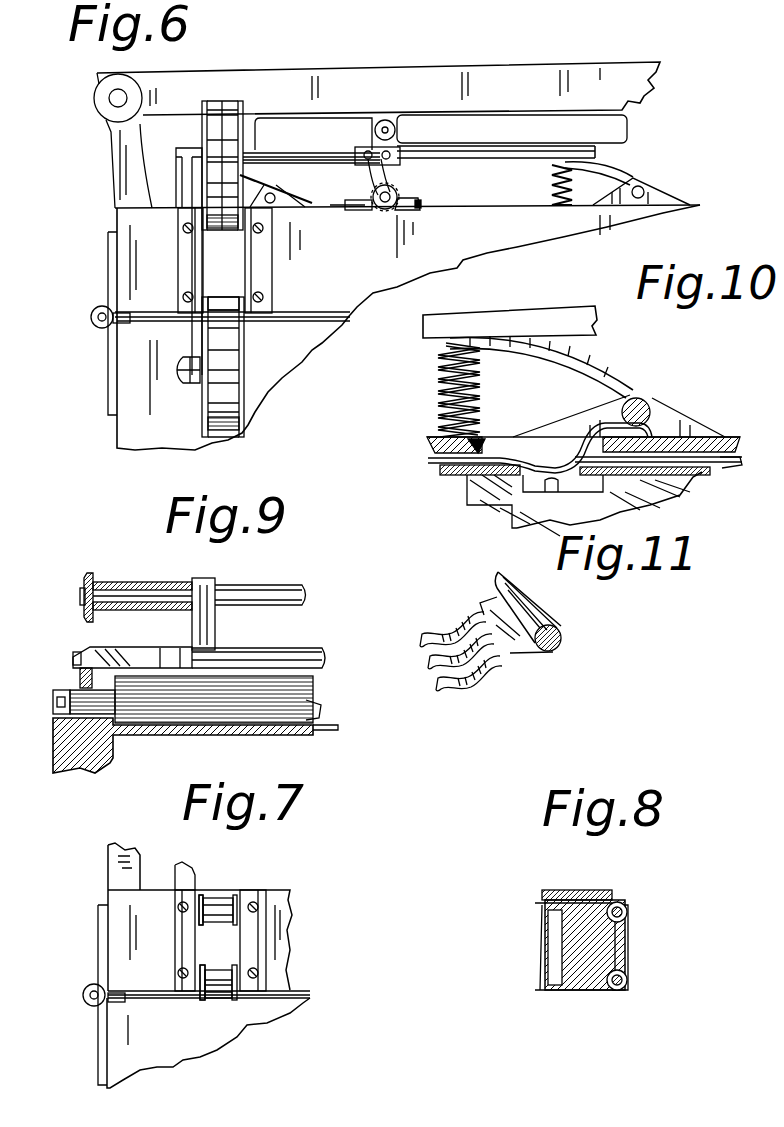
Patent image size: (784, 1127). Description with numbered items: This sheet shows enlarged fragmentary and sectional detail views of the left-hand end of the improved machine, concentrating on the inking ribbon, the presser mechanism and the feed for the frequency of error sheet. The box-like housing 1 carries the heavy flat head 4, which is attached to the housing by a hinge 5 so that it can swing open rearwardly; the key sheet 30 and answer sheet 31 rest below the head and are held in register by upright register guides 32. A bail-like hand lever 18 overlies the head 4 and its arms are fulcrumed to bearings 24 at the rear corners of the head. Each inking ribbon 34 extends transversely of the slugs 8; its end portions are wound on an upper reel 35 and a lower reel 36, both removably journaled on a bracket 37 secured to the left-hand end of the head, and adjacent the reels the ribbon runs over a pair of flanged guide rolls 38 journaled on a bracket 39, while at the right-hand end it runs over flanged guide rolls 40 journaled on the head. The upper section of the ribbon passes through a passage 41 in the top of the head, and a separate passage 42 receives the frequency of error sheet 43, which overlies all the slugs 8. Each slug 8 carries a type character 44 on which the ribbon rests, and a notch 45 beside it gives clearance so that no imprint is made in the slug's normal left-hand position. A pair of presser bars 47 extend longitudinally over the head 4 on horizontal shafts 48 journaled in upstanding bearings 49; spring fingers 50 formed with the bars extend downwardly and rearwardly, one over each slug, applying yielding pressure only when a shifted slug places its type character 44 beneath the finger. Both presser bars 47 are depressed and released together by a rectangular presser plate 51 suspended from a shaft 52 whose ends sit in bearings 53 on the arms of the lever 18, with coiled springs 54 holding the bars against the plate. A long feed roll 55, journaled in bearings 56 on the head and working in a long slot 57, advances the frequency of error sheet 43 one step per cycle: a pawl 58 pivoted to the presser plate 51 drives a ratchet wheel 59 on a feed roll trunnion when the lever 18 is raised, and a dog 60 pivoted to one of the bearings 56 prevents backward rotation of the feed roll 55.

In FIG. 6, the housing 1 is at (313, 350).
In FIG. 7, the housing 1 is at (150, 1068).
In FIG. 6, the head 4 is at (404, 310).
In FIG. 10, the head 4 is at (726, 437).
In FIG. 9, the head 4 is at (70, 741).
In FIG. 7, the head 4 is at (281, 918).
In FIG. 8, the head 4 is at (586, 986).
In FIG. 6, the hinge 5 is at (98, 327).
In FIG. 7, the hinge 5 is at (90, 1007).
In FIG. 10, the slug 8 is at (609, 500).
In FIG. 8, the slug 8 is at (560, 946).
In FIG. 6, the hand lever 18 is at (415, 88).
In FIG. 6, the bearings 24 is at (126, 157).
In FIG. 7, the bearings 24 is at (120, 871).
In FIG. 6, the key sheet 30 is at (343, 326).
In FIG. 7, the key sheet 30 is at (297, 1003).
In FIG. 6, the answer sheet 31 is at (331, 311).
In FIG. 7, the answer sheet 31 is at (300, 992).
In FIG. 6, the register guides 32 is at (125, 323).
In FIG. 7, the register guides 32 is at (118, 1001).
In FIG. 6, the inking ribbon 34 is at (222, 116).
In FIG. 10, the inking ribbon 34 is at (540, 466).
In FIG. 7, the inking ribbon 34 is at (218, 905).
In FIG. 8, the inking ribbon 34 is at (633, 943).
In FIG. 6, the upper reel 35 is at (207, 146).
In FIG. 6, the lower reel 36 is at (212, 378).
In FIG. 6, the bracket 37 is at (195, 149).
In FIG. 6, the flanged guide rolls 38 is at (222, 303).
In FIG. 7, the flanged guide rolls 38 is at (243, 905).
In FIG. 6, the bracket 39 is at (181, 241).
In FIG. 7, the bracket 39 is at (186, 941).
In FIG. 8, the flanged guide rolls 40 is at (630, 910).
In FIG. 8, the passage 41 is at (591, 893).
In FIG. 10, the passage 42 is at (726, 468).
In FIG. 9, the passage 42 is at (334, 731).
In FIG. 10, the frequency of error sheet 43 is at (437, 464).
In FIG. 10, the type character 44 is at (470, 476).
In FIG. 10, the notch 45 is at (590, 480).
In FIG. 6, the presser bars 47 is at (252, 189).
In FIG. 10, the presser bars 47 is at (605, 360).
In FIG. 11, the presser bars 47 is at (543, 607).
In FIG. 6, the shafts 48 is at (277, 194).
In FIG. 10, the shafts 48 is at (656, 408).
In FIG. 11, the shafts 48 is at (565, 640).
In FIG. 6, the bearings 49 is at (293, 205).
In FIG. 10, the bearings 49 is at (683, 416).
In FIG. 10, the spring fingers 50 is at (551, 458).
In FIG. 11, the spring fingers 50 is at (430, 636).
In FIG. 6, the presser plate 51 is at (289, 155).
In FIG. 10, the presser plate 51 is at (553, 322).
In FIG. 9, the presser plate 51 is at (259, 657).
In FIG. 6, the shaft 52 is at (398, 130).
In FIG. 9, the shaft 52 is at (259, 592).
In FIG. 6, the bearings 53 is at (378, 121).
In FIG. 9, the bearings 53 is at (98, 581).
In FIG. 6, the coiled springs 54 is at (550, 184).
In FIG. 6, the feed roll 55 is at (350, 200).
In FIG. 9, the feed roll 55 is at (316, 684).
In FIG. 6, the bearings 56 is at (350, 210).
In FIG. 9, the bearings 56 is at (68, 691).
In FIG. 10, the slot 57 is at (489, 436).
In FIG. 9, the slot 57 is at (330, 719).
In FIG. 6, the pawl 58 is at (368, 171).
In FIG. 9, the pawl 58 is at (86, 683).
In FIG. 6, the ratchet wheel 59 is at (401, 184).
In FIG. 9, the ratchet wheel 59 is at (103, 693).
In FIG. 6, the dog 60 is at (422, 198).